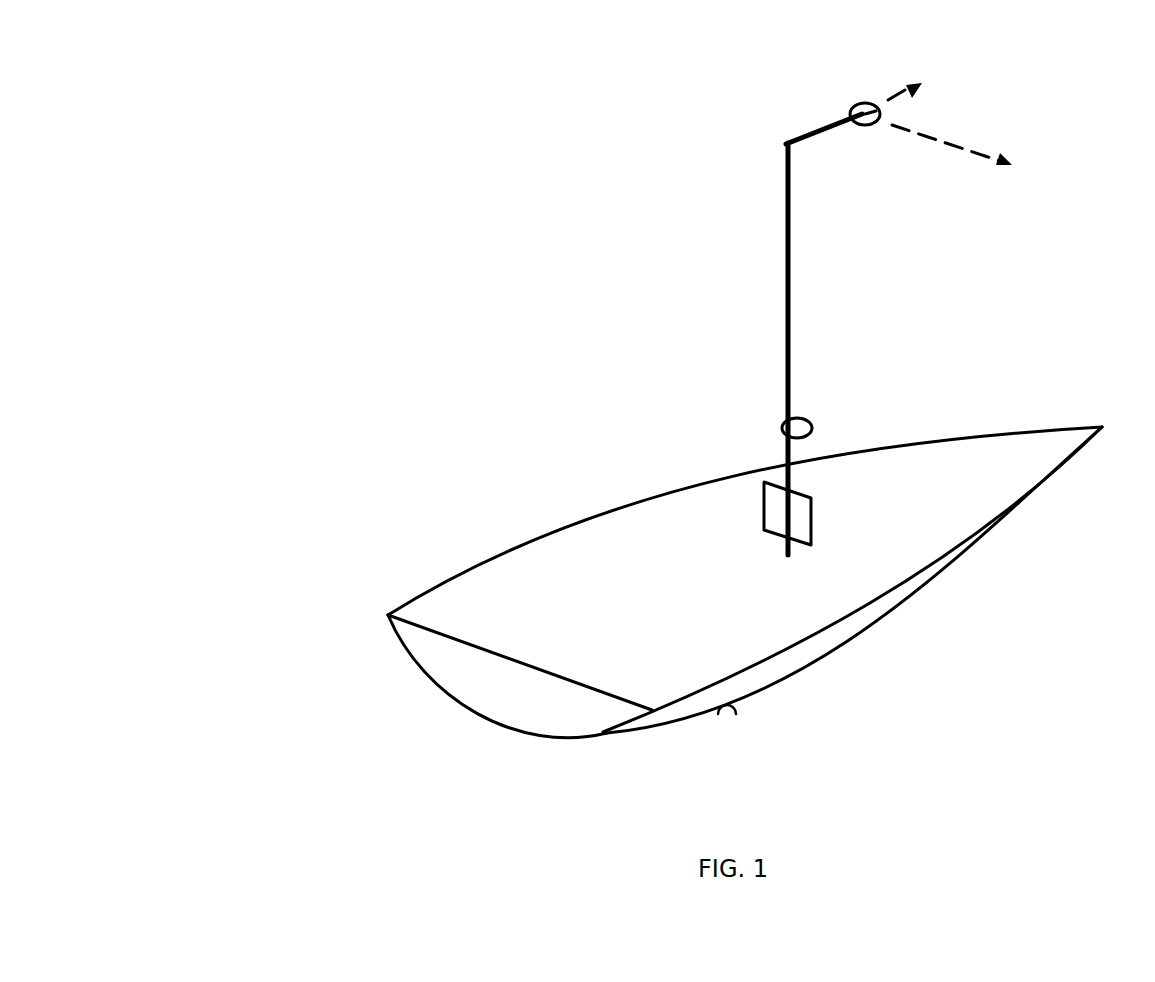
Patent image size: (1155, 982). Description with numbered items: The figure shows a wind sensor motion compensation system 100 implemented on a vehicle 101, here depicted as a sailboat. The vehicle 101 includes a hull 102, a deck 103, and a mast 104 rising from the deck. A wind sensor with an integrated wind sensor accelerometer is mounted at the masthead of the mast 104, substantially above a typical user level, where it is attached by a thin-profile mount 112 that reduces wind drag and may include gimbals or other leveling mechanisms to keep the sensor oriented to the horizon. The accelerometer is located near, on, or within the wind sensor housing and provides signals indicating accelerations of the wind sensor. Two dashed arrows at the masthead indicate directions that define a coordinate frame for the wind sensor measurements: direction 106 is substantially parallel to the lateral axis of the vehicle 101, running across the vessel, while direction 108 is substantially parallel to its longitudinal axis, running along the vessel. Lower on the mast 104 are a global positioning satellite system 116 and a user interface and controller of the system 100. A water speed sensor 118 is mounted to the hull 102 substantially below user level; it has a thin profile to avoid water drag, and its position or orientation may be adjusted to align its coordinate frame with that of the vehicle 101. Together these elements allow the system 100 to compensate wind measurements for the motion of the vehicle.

The wind sensor motion compensation system 100 is at (317, 176).
The vehicle 101 is at (412, 576).
The hull 102 is at (933, 578).
The deck 103 is at (1007, 490).
The mast 104 is at (785, 183).
The direction 106 is at (950, 147).
The direction 108 is at (893, 97).
The mount 112 is at (823, 120).
The global positioning satellite system (GPS) 116 is at (812, 422).
The water speed sensor 118 is at (737, 716).